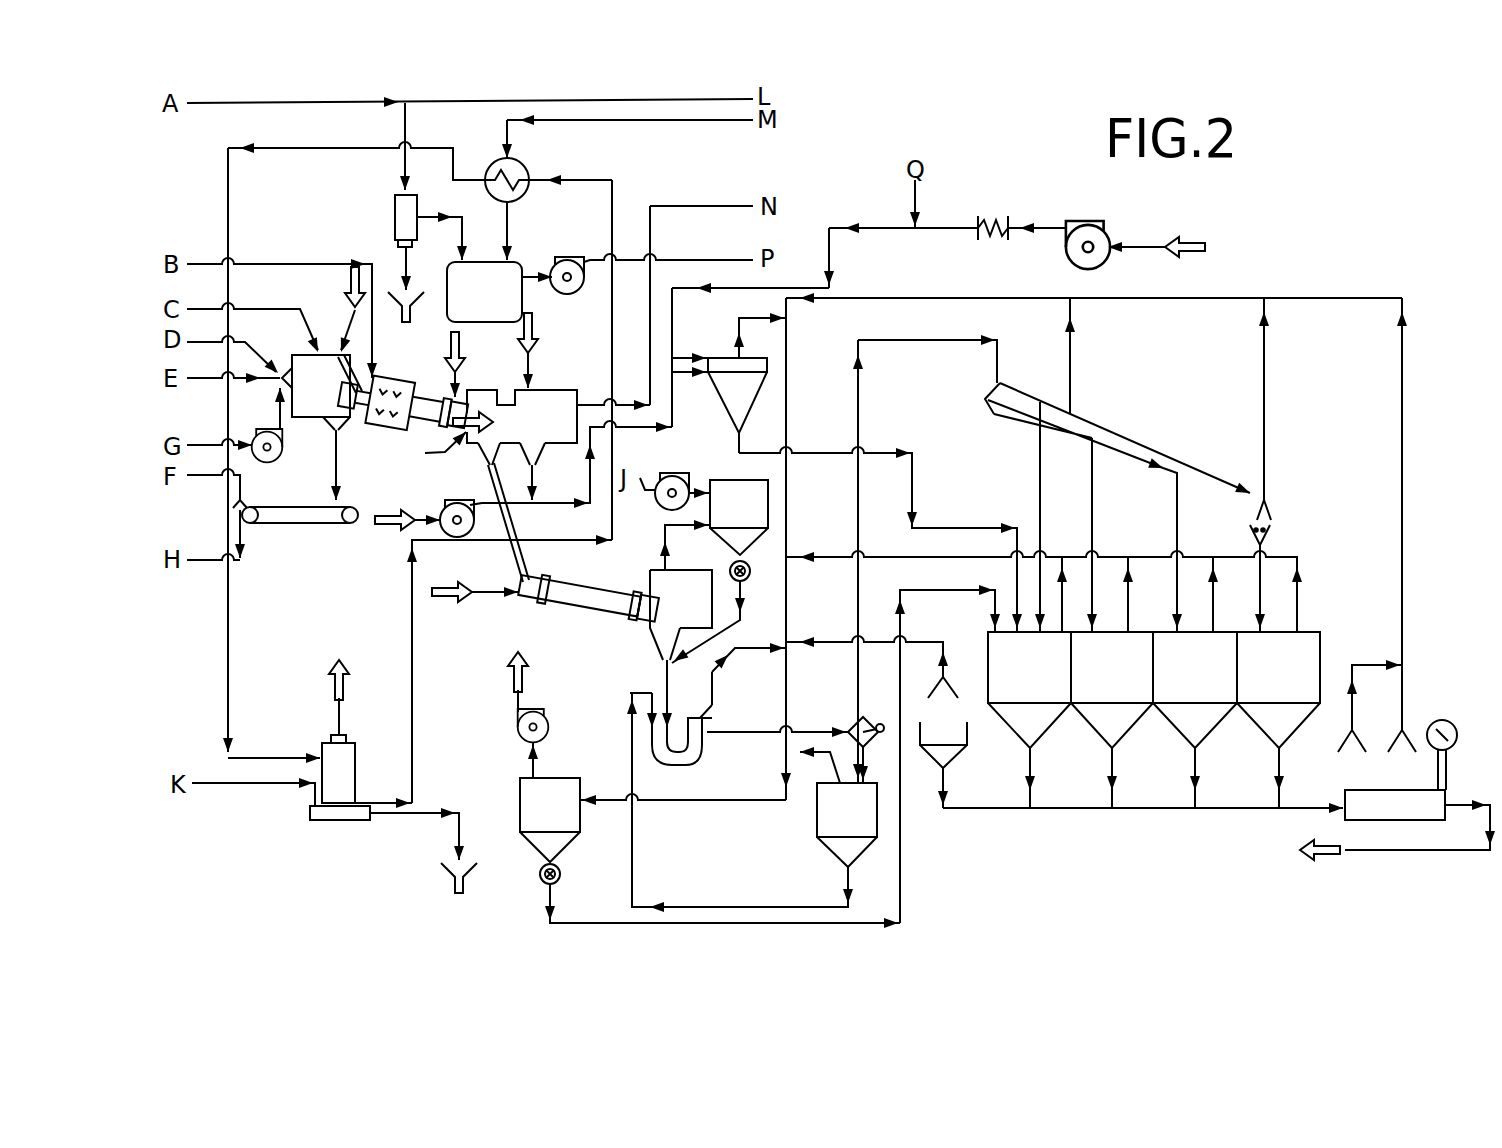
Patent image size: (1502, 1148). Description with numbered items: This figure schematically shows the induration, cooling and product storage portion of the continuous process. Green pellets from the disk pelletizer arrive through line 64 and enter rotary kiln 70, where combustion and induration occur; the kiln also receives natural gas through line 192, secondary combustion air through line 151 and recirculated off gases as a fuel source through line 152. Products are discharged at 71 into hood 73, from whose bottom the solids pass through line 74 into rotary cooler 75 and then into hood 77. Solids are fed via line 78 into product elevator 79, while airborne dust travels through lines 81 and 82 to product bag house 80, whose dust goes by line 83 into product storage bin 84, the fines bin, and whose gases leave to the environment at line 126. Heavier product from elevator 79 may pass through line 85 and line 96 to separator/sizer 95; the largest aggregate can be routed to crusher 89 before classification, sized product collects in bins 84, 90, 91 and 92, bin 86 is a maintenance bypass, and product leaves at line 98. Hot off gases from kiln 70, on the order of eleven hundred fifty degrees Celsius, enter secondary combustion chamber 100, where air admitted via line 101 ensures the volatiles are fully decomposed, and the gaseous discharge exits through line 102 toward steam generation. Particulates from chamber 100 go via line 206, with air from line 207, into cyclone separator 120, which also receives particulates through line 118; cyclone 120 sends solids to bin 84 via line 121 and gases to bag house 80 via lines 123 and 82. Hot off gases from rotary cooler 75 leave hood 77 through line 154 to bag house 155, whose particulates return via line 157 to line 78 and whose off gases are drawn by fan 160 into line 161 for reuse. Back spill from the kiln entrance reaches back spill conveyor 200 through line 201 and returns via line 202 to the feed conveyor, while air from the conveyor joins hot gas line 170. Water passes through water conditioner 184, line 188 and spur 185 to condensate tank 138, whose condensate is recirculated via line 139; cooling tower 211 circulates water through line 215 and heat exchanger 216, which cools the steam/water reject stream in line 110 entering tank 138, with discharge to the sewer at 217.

The line 64 is at (294, 307).
The rotary kiln 70 is at (430, 388).
The kiln discharge 71 is at (470, 397).
The discharge hood 73 is at (482, 392).
The solids discharge line 74 is at (513, 548).
The rotary cooler 75 is at (573, 602).
The hood 77 is at (648, 632).
The line 78 is at (665, 682).
The product elevator 79 is at (695, 755).
The product bag house 80 is at (520, 817).
The line 81 is at (742, 652).
The line 82 is at (788, 693).
The line 83 is at (902, 873).
The product storage bin 84 is at (1013, 733).
The line 85 is at (728, 730).
The bypass bin 86 is at (817, 822).
The crusher 89 is at (1275, 527).
The product bin 90 is at (1097, 733).
The product bin 91 is at (1178, 733).
The product bin 92 is at (1260, 733).
The separator/sizer 95 is at (1007, 435).
The line 96 is at (860, 408).
The line 98 is at (1300, 803).
The secondary combustion chamber 100 is at (547, 390).
The line 101 is at (533, 355).
The line 102 is at (680, 203).
The line 110 is at (633, 122).
The line 118 is at (920, 190).
The cyclone separator 120 is at (765, 385).
The line 121 is at (958, 527).
The line 123 is at (750, 322).
The line 126 is at (530, 763).
The condensate tank 138 is at (523, 262).
The line 139 is at (687, 267).
The line 151 is at (204, 450).
The line 152 is at (278, 262).
The line 154 is at (665, 562).
The bag house 155 is at (768, 510).
The line 157 is at (742, 622).
The fan 160 is at (672, 475).
The line 161 is at (643, 477).
The hot gas line 170 is at (262, 352).
The water conditioner 184 is at (395, 218).
The spur 185 is at (400, 123).
The line 188 is at (432, 102).
The line 192 is at (202, 382).
The back spill conveyor 200 is at (322, 525).
The line 201 is at (340, 457).
The line 202 is at (200, 565).
The line 206 is at (571, 480).
The line 207 is at (482, 500).
The cooling tower 211 is at (347, 823).
The line 215 is at (413, 668).
The heat exchanger 216 is at (529, 163).
The sewer 217 is at (443, 873).